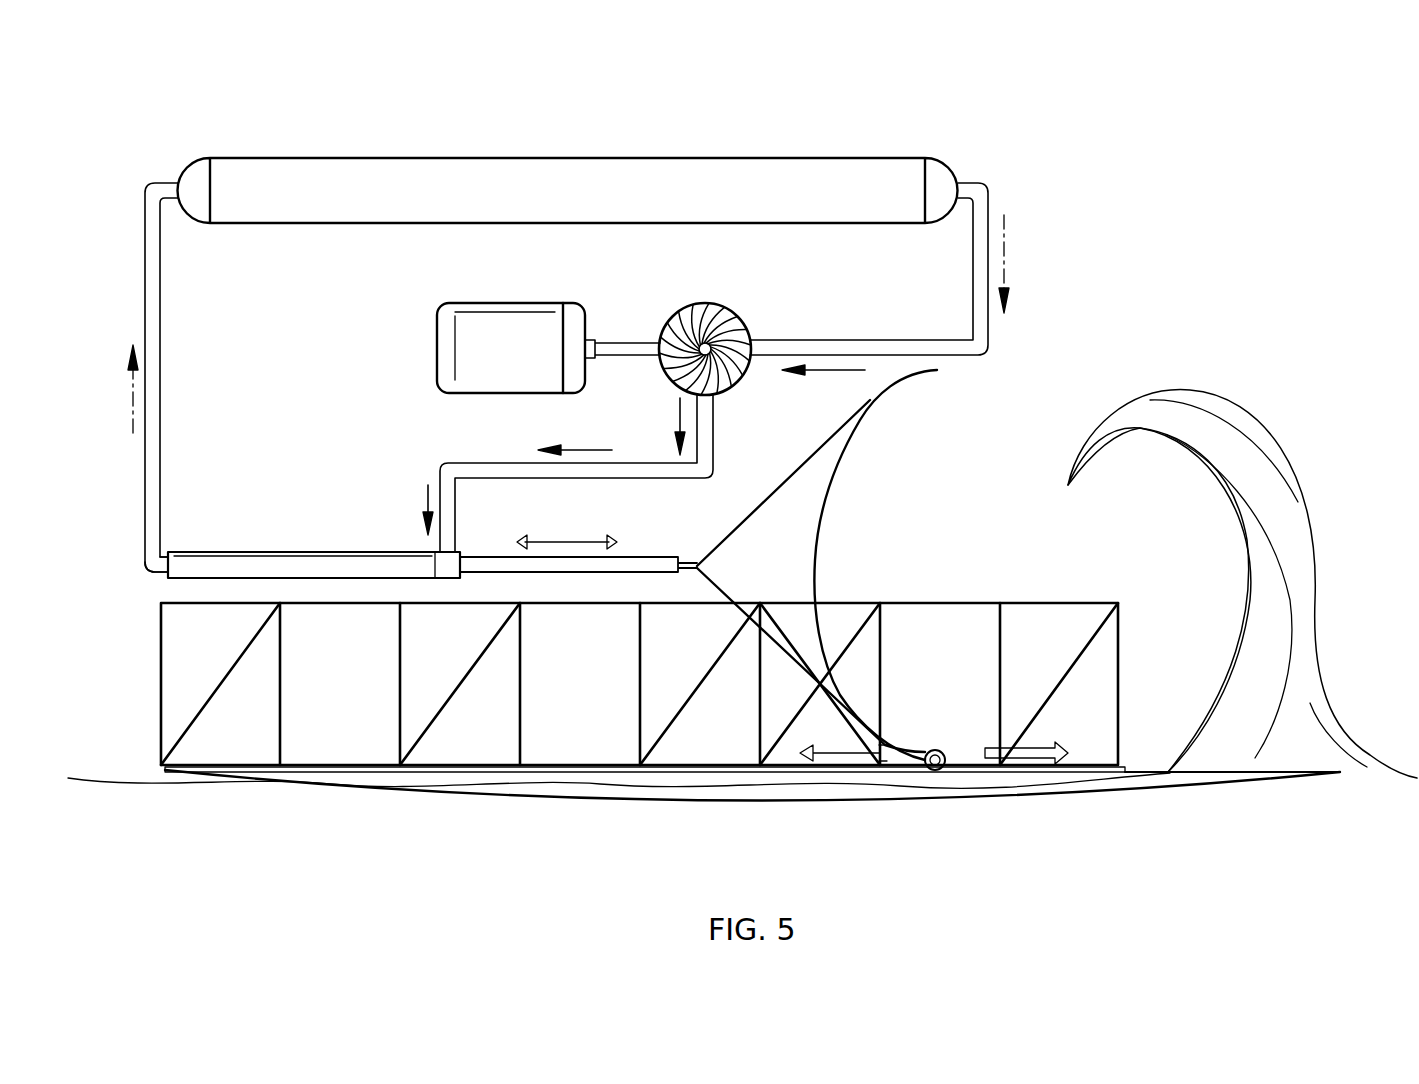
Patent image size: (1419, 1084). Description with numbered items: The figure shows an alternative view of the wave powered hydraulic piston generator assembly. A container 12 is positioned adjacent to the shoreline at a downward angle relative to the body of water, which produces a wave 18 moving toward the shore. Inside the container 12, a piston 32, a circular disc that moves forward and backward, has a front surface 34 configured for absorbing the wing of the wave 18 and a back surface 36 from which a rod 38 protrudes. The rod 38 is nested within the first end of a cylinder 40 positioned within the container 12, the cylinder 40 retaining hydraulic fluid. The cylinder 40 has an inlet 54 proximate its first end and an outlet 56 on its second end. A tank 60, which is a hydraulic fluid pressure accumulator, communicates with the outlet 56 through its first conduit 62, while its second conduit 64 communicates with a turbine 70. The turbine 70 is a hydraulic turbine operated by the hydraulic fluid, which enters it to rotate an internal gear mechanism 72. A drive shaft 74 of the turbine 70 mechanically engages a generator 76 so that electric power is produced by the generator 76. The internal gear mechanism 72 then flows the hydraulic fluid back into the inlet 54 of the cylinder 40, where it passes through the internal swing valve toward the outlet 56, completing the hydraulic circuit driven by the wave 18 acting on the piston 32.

The container 12 is at (970, 605).
The wave 18 is at (1278, 568).
The piston 32 is at (790, 515).
The front surface 34 is at (826, 627).
The back surface 36 is at (705, 550).
The rod 38 is at (636, 563).
The cylinder 40 is at (268, 566).
The inlet 54 is at (442, 492).
The outlet 56 is at (150, 562).
The tank 60 is at (691, 185).
The first conduit 62 is at (160, 288).
The second conduit 64 is at (985, 343).
The turbine 70 is at (721, 308).
The internal gear mechanism 72 is at (733, 328).
The drive shaft 74 is at (630, 345).
The generator 76 is at (462, 335).